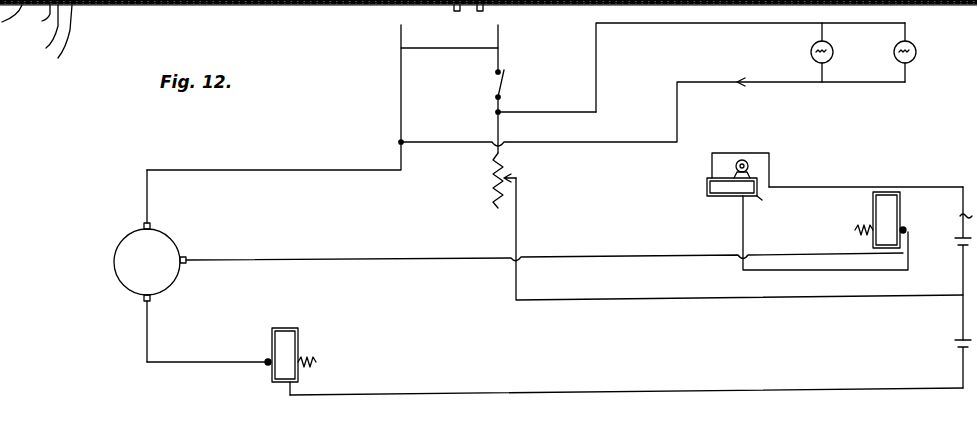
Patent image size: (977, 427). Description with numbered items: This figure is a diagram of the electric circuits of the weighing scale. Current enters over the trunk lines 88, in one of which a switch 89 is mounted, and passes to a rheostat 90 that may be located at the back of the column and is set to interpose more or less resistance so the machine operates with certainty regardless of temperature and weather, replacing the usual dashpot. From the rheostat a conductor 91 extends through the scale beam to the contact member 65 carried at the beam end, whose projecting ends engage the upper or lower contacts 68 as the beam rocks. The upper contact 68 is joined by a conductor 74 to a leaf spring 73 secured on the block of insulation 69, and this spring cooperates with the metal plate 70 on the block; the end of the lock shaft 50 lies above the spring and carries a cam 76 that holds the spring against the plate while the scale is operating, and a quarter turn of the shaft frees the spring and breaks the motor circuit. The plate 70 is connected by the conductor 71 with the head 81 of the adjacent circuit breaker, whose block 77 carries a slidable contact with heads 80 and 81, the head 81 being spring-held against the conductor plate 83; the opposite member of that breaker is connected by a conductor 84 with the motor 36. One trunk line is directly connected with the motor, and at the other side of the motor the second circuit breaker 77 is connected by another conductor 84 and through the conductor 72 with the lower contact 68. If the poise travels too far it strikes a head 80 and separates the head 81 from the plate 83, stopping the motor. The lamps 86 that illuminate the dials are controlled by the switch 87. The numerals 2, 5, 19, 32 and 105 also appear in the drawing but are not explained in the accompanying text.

The conductor 2 is at (43, 22).
The conductor 5 is at (11, 24).
The contact 19 is at (512, 5).
The trolley rail 32 is at (910, 0).
The motor 36 is at (136, 266).
The lock shaft 50 is at (746, 161).
The conductor element 65 is at (963, 268).
The contact points 68 is at (963, 352).
The block of insulation 69 is at (707, 196).
The metal plate 70 is at (757, 196).
The conductor 71 is at (835, 275).
The conductor 72 is at (712, 392).
The leaf spring 73 is at (805, 168).
The conductor 74 is at (856, 187).
The cam 76 is at (779, 153).
The circuit breaker block 77 is at (272, 335).
The head 80 is at (322, 358).
The head 81 is at (908, 228).
The conductor plate 83 is at (278, 384).
The conductor 84 is at (580, 258).
The electric lamps 86 is at (894, 52).
The switch 87 is at (742, 78).
The trunk lines 88 is at (322, 97).
The switch 89 is at (503, 88).
The rheostat 90 is at (486, 180).
The conductor 91 is at (692, 302).
The conductor 105 is at (750, 57).